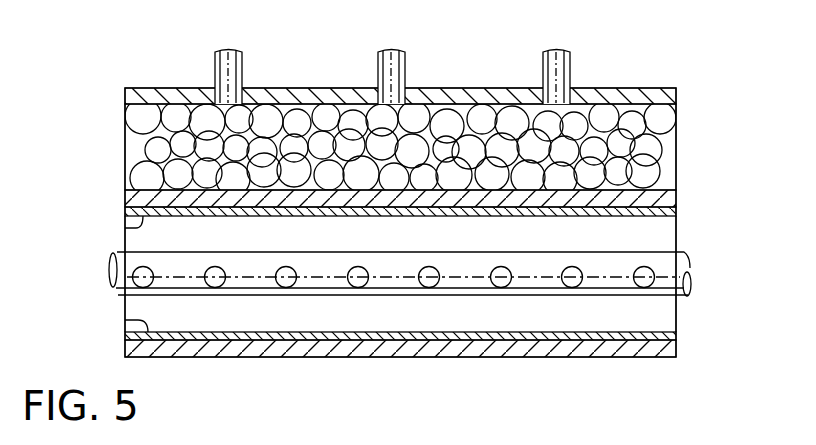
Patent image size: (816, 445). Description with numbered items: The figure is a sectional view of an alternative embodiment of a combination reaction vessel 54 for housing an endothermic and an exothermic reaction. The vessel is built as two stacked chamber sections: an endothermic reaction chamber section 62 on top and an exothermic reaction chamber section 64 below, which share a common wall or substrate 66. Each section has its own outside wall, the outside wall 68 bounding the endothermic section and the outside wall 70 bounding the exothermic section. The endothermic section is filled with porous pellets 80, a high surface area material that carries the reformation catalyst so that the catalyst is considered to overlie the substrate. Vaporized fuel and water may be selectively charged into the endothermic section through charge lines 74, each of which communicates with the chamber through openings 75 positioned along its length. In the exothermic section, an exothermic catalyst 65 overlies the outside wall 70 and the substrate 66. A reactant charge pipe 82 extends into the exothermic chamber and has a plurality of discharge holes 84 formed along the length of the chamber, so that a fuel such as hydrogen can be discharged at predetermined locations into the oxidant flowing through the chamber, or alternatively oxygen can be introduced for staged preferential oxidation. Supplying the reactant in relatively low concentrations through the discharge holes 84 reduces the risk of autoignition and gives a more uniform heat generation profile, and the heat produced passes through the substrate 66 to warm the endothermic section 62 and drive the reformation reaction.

The combination reaction vessel 54 is at (679, 76).
The endothermic reaction chamber section 62 is at (116, 121).
The exothermic reaction chamber section 64 is at (676, 237).
The exothermic catalyst 65 is at (125, 226).
The substrate 66 is at (670, 200).
The outside wall 68 is at (632, 93).
The outside wall 70 is at (528, 353).
The charge lines 74 is at (419, 58).
The openings 75 is at (228, 100).
The porous pellets 80 is at (655, 137).
The reactant charge pipe 82 is at (122, 258).
The discharge holes 84 is at (134, 277).